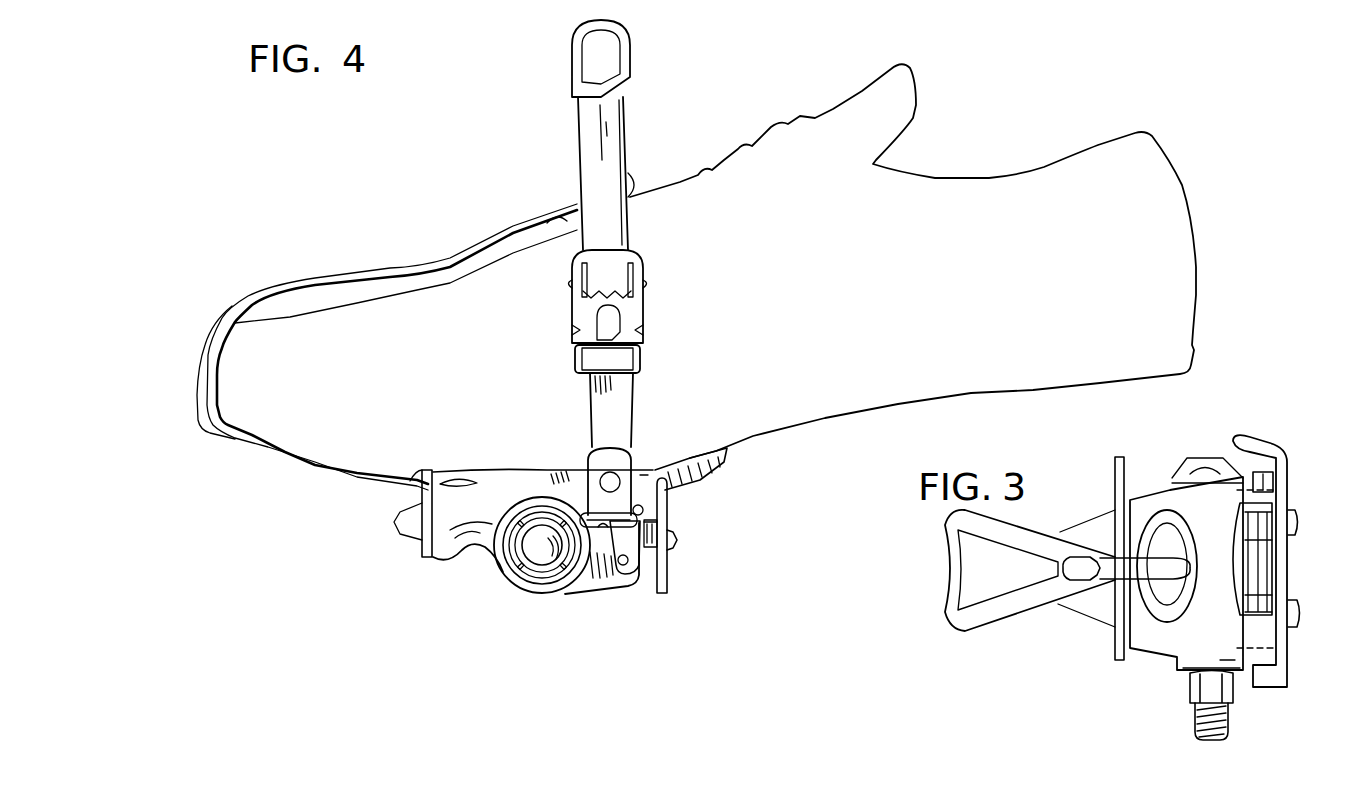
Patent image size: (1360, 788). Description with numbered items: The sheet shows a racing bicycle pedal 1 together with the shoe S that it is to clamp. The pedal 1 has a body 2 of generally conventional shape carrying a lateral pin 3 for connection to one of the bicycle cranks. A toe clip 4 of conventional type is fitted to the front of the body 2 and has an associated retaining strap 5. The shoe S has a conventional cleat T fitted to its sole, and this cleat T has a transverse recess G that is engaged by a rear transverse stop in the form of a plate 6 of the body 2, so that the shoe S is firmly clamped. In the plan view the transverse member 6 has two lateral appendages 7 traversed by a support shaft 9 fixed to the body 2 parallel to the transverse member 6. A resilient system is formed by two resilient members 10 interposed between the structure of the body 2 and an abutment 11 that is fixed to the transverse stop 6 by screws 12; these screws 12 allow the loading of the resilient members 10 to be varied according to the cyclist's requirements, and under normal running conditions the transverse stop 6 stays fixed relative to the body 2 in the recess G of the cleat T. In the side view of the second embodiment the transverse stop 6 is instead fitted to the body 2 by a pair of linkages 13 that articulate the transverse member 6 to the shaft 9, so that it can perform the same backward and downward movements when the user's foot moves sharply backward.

In FIG. 4, the pedal 1 is at (573, 589).
In FIG. 3, the pedal 1 is at (1137, 583).
In FIG. 4, the body 2 is at (450, 530).
In FIG. 3, the body 2 is at (1150, 645).
In FIG. 3, the lateral pin 3 is at (1190, 730).
In FIG. 4, the toe clip 4 is at (380, 272).
In FIG. 3, the toe clip 4 is at (1010, 607).
In FIG. 4, the retaining strap 5 is at (608, 244).
In FIG. 4, the transverse stop 6 is at (667, 584).
In FIG. 3, the transverse stop 6 is at (1277, 484).
In FIG. 3, the lateral appendages 7 is at (1280, 450).
In FIG. 4, the support shaft 9 is at (627, 565).
In FIG. 3, the support shaft 9 is at (1263, 573).
In FIG. 3, the resilient members 10 is at (1257, 527).
In FIG. 3, the abutment 11 is at (1240, 590).
In FIG. 4, the screws 12 is at (674, 548).
In FIG. 3, the screws 12 is at (1295, 532).
In FIG. 4, the linkages 13 is at (654, 525).
In FIG. 4, the shoe S is at (720, 163).
In FIG. 4, the cleat T is at (723, 463).
In FIG. 4, the transverse recess G is at (677, 450).